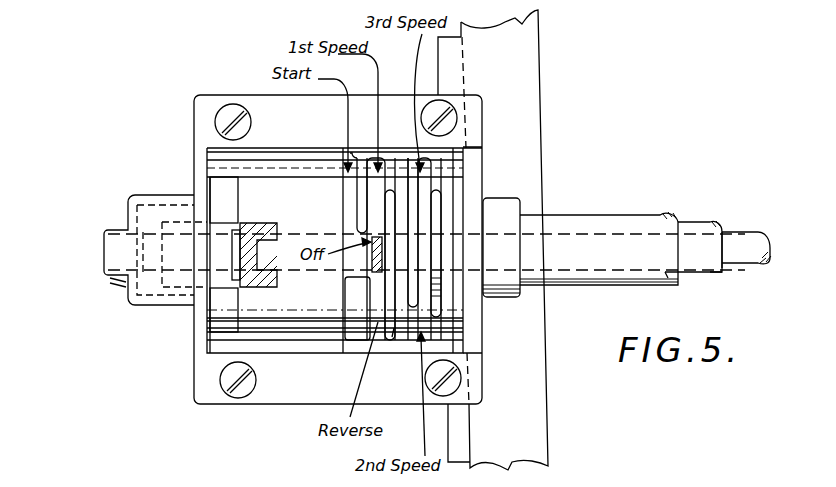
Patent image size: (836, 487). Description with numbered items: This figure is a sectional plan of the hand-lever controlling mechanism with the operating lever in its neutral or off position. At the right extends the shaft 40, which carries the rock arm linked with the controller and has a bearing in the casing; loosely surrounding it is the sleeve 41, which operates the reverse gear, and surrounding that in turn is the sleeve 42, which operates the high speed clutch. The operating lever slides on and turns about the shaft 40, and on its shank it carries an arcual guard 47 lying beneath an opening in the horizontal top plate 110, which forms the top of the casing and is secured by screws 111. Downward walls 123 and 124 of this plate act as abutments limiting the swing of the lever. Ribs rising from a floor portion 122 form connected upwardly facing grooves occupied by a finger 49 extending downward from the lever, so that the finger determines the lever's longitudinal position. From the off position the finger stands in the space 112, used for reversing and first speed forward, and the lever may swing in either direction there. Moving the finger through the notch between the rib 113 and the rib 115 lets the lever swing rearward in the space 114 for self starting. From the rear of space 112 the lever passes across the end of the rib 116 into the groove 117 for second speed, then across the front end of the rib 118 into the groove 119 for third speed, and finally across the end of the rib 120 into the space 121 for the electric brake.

The shaft 40 is at (738, 238).
The sleeve 41 is at (712, 195).
The sleeve 42 is at (643, 195).
The arcual guard 47 is at (213, 254).
The finger 49 is at (372, 262).
The top plate 110 is at (338, 249).
The screws 111 is at (250, 390).
The space 112 is at (378, 202).
The rib 113 is at (361, 308).
The space 114 is at (350, 186).
The rib 115 is at (356, 160).
The rib 116 is at (393, 340).
The groove 117 is at (402, 207).
The rib 118 is at (420, 302).
The groove 119 is at (448, 178).
The rib 120 is at (438, 218).
The space 121 is at (466, 170).
The floor portion 122 is at (378, 300).
The downward wall 123 is at (322, 150).
The downward wall 124 is at (335, 252).